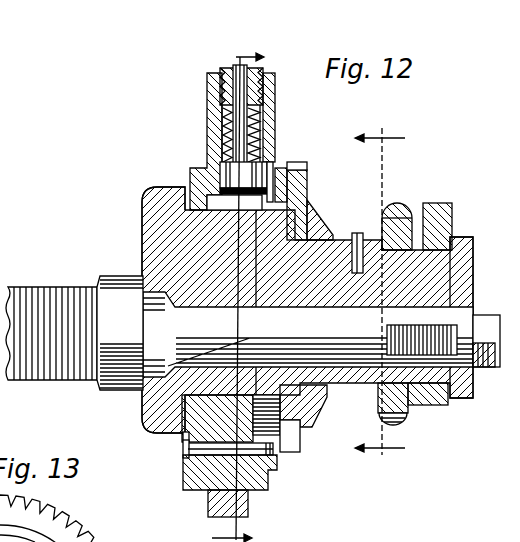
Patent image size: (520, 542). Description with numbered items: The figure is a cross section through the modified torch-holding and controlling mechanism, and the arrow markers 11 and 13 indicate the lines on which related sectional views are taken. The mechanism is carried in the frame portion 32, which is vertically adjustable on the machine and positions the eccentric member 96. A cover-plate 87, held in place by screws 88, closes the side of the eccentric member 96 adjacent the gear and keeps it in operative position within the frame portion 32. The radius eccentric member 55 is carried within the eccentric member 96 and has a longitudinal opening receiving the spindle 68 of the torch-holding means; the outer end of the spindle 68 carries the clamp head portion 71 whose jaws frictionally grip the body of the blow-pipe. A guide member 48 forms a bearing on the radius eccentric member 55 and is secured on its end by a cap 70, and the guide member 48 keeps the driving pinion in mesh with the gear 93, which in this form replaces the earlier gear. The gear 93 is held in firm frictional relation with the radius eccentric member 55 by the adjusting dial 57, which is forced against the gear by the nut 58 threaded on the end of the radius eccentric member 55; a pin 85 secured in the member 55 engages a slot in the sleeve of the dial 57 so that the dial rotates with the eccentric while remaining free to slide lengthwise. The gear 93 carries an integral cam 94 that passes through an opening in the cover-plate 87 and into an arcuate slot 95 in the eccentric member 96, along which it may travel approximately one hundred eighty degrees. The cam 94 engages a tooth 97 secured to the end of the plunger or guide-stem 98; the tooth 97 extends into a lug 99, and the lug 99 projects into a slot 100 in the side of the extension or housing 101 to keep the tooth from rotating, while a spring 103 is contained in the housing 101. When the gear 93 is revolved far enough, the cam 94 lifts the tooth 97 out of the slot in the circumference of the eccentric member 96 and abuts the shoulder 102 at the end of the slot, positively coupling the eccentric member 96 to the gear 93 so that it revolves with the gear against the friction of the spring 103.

In FIG. 12, the section line 11- 11 is at (238, 288).
In FIG. 12, the section line 13- 13 is at (380, 293).
In FIG. 12, the frame portion 32 is at (248, 512).
In FIG. 12, the guide member 48 is at (437, 204).
In FIG. 12, the radius eccentric member 55 is at (452, 250).
In FIG. 12, the adjusting dial 57 is at (320, 215).
In FIG. 12, the nut 58 is at (405, 416).
In FIG. 12, the spindle 68 is at (150, 414).
In FIG. 12, the cap 70 is at (478, 398).
In FIG. 12, the clamp head portion 71 is at (62, 296).
In FIG. 12, the pin 85 is at (357, 240).
In FIG. 12, the cover-plate 87 is at (278, 482).
In FIG. 12, the screws 88 is at (188, 452).
In FIG. 12, the gear 93 is at (296, 440).
In FIG. 12, the cam 94 is at (306, 178).
In FIG. 12, the arcuate slot 95 is at (314, 421).
In FIG. 12, the eccentric member 96 is at (185, 440).
In FIG. 12, the tooth 97 is at (284, 185).
In FIG. 12, the plunger or guide-stem 98 is at (234, 90).
In FIG. 12, the lug 99 is at (272, 180).
In FIG. 12, the slot 100 is at (268, 165).
In FIG. 12, the extension or housing 101 is at (208, 124).
In FIG. 13, the shoulder 102 is at (90, 534).
In FIG. 12, the spring 103 is at (232, 138).